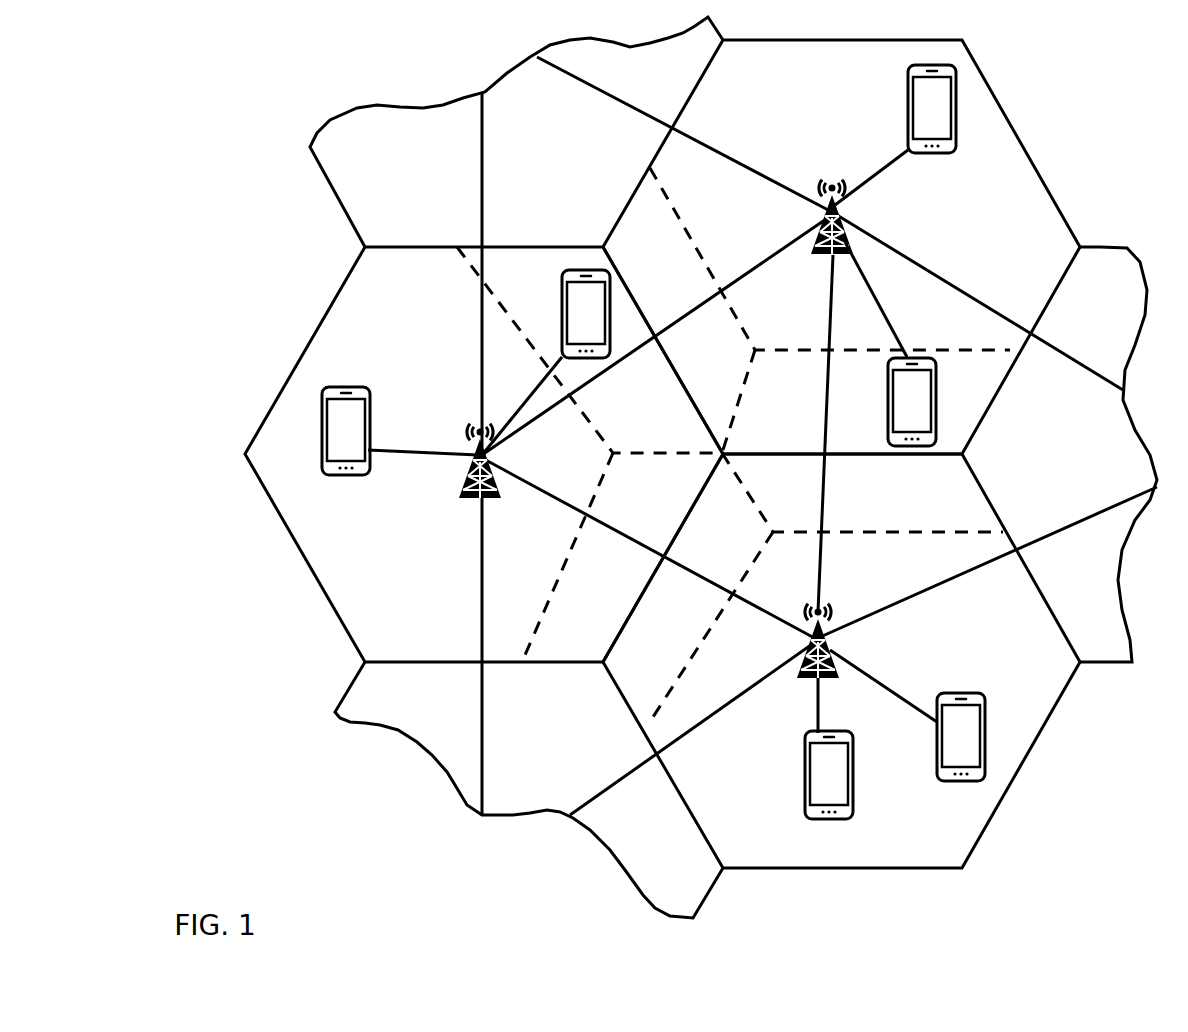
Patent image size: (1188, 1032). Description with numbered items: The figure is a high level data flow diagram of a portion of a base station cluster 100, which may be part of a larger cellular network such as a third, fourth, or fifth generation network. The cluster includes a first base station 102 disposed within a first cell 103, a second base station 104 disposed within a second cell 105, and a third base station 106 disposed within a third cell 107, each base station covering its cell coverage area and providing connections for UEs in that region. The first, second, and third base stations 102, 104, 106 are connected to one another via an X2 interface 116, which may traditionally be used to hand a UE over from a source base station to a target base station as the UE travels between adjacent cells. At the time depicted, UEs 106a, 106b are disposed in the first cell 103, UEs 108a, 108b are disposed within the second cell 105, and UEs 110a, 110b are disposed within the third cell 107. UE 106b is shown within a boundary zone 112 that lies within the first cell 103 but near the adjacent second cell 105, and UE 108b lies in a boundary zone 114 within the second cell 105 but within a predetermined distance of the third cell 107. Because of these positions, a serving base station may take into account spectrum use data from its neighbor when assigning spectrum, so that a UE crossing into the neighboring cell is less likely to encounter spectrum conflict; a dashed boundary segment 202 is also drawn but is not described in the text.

The base station cluster 100 is at (260, 157).
The first base station 102 is at (467, 500).
The first cell 103 is at (316, 330).
The second base station 104 is at (818, 252).
The second cell 105 is at (1020, 140).
The third base station 106 is at (840, 637).
The third cell 107 is at (1053, 713).
The UE 106a is at (368, 405).
The UE 106b is at (562, 320).
The UE 108a is at (905, 112).
The UE 108b is at (887, 420).
The UE 110a is at (817, 820).
The UE 110b is at (988, 712).
The boundary zone 112 is at (617, 427).
The boundary zone 114 is at (980, 382).
The X2 interface 116 is at (705, 310).
The cell boundary segment 202 is at (577, 575).